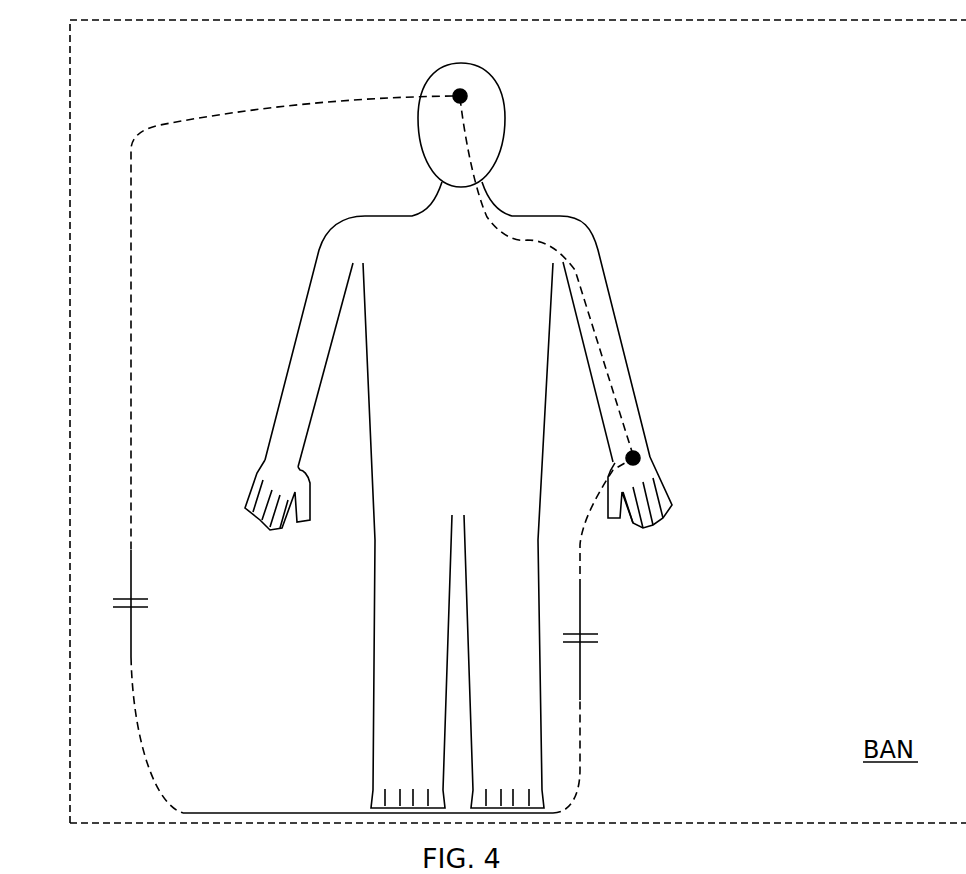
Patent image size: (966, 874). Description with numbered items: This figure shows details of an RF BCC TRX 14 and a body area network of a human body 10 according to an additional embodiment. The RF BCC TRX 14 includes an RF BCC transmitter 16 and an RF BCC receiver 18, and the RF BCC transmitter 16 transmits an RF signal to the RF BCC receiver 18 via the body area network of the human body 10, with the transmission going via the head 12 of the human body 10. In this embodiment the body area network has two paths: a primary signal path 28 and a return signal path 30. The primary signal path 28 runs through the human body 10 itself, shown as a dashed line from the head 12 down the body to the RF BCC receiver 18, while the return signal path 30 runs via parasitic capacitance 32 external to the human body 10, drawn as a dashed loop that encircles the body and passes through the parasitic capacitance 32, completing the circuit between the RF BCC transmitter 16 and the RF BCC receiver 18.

The human body 10 is at (317, 208).
The head 12 is at (410, 62).
The RF BCC TRX 14 is at (482, 96).
The RF BCC transmitter 16 is at (453, 97).
The RF BCC receiver 18 is at (650, 460).
The primary signal path 28 is at (528, 242).
The return signal path 30 is at (275, 812).
The parasitic capacitance 32 is at (142, 593).